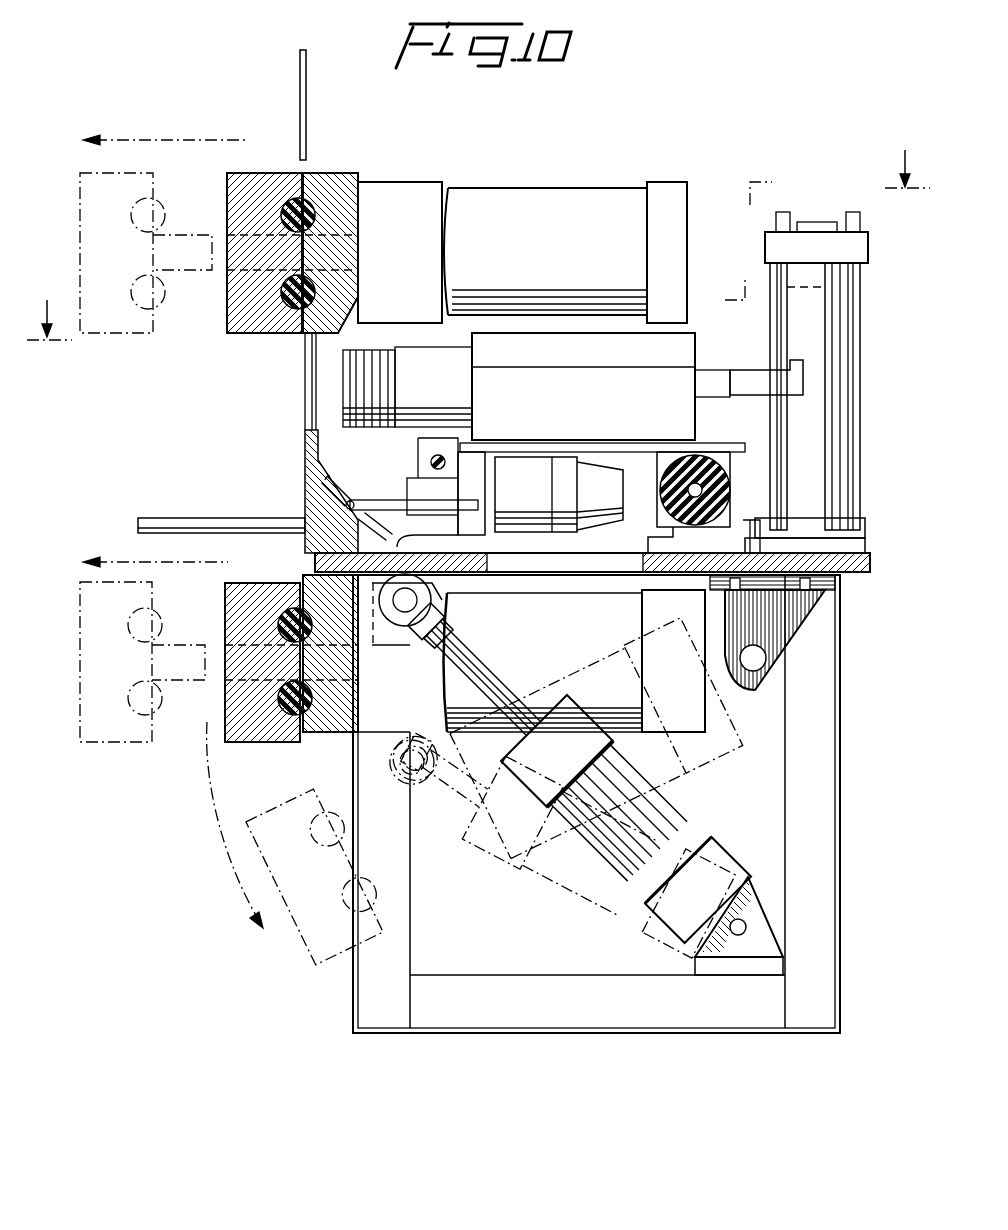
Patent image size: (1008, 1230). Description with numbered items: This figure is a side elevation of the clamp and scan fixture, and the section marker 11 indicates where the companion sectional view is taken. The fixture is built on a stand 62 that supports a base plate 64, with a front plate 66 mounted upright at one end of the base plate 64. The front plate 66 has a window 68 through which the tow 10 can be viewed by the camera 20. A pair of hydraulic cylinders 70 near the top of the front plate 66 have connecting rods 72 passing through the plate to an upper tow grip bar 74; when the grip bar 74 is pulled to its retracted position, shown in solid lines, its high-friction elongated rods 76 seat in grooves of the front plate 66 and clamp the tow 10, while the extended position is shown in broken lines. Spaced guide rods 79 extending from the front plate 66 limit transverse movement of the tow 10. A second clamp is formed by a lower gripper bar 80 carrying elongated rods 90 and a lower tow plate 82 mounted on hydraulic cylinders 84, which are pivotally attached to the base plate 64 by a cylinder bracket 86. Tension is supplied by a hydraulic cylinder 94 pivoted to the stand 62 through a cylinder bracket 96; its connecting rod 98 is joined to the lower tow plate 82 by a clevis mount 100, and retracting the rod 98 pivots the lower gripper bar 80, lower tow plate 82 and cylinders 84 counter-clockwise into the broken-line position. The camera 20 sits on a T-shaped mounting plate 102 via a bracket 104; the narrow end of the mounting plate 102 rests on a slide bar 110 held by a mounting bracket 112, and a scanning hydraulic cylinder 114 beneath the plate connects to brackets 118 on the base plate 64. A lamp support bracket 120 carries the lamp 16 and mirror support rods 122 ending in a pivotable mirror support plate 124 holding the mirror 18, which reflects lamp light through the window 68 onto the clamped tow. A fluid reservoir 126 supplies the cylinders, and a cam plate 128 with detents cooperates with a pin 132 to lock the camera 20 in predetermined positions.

The tow 10 is at (302, 65).
The section line 11 is at (478, 263).
The lamp 16 is at (545, 485).
The mirror 18 is at (322, 480).
The camera 20 is at (698, 360).
The stand 62 is at (820, 797).
The base plate 64 is at (872, 562).
The front plate 66 is at (362, 178).
The window 68 is at (306, 391).
The hydraulic cylinders 70 is at (488, 192).
The connecting rods 72 is at (190, 275).
The upper tow grip bar 74 is at (282, 172).
The elongated rods 76 is at (302, 212).
The guide rods 79 is at (172, 520).
The lower gripper bar 80 is at (95, 742).
The lower tow plate 82 is at (336, 722).
The hydraulic cylinders 84 is at (698, 722).
The cylinder bracket 86 is at (777, 630).
The elongated rods 90 is at (285, 608).
The hydraulic cylinder 94 is at (683, 838).
The cylinder bracket 96 is at (727, 940).
The connecting rod 98 is at (508, 692).
The clevis mount 100 is at (382, 628).
The mounting plate 102 is at (732, 468).
The bracket 104 is at (752, 390).
The slide bar 110 is at (436, 455).
The mounting bracket 112 is at (470, 545).
The hydraulic cylinder 114 is at (787, 493).
The brackets 118 is at (666, 546).
The lamp support bracket 120 is at (475, 458).
The mirror support rods 122 is at (427, 508).
The mirror support plate 124 is at (397, 547).
The fluid reservoir 126 is at (822, 313).
The cam plate 128 is at (800, 525).
The pin 132 is at (835, 545).